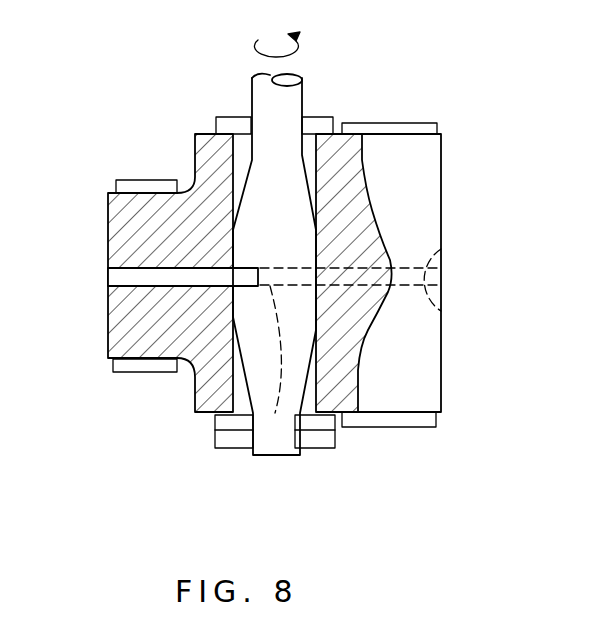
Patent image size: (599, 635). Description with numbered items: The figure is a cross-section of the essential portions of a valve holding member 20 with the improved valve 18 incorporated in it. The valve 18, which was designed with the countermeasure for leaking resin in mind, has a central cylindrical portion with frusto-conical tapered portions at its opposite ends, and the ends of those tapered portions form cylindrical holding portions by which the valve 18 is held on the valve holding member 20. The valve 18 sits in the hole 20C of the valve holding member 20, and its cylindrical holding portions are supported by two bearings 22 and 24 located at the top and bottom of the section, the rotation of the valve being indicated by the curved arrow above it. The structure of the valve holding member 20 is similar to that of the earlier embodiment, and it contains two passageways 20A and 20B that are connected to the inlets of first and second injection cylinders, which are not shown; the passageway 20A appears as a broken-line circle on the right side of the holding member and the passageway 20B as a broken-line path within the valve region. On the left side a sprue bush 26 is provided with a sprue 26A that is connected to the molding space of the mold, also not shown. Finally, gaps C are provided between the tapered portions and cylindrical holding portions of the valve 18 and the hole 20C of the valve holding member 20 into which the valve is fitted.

The valve 18 is at (292, 226).
The valve holding member 20 is at (345, 148).
The passageway 20A is at (413, 303).
The passageway 20B is at (275, 413).
The hole 20C is at (310, 147).
The bearing 22 is at (225, 124).
The bearing 24 is at (322, 423).
The sprue bush 26 is at (157, 333).
The sprue 26A is at (128, 277).
The gap C is at (240, 150).